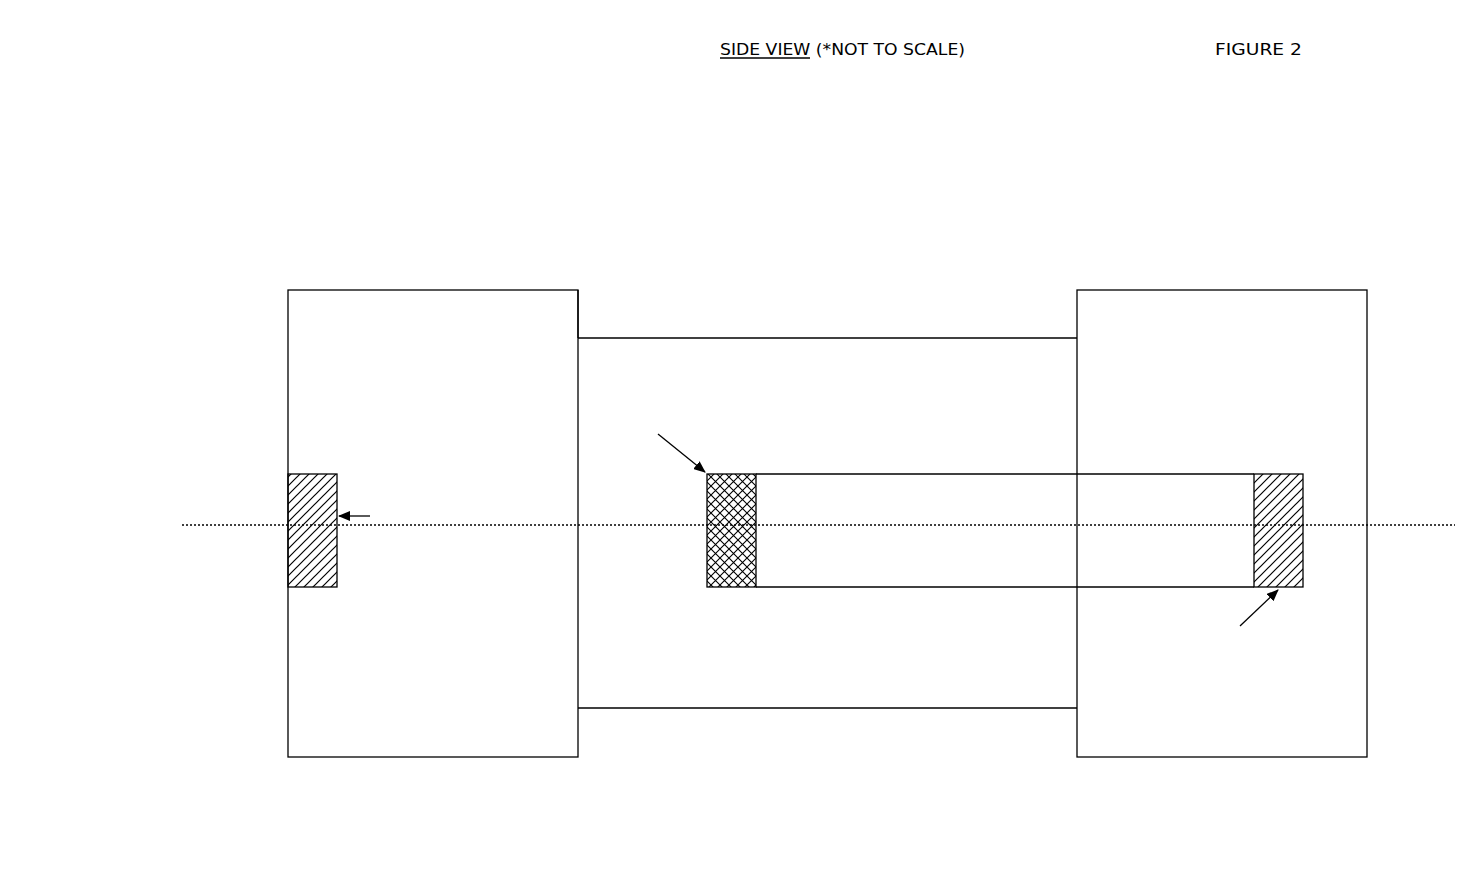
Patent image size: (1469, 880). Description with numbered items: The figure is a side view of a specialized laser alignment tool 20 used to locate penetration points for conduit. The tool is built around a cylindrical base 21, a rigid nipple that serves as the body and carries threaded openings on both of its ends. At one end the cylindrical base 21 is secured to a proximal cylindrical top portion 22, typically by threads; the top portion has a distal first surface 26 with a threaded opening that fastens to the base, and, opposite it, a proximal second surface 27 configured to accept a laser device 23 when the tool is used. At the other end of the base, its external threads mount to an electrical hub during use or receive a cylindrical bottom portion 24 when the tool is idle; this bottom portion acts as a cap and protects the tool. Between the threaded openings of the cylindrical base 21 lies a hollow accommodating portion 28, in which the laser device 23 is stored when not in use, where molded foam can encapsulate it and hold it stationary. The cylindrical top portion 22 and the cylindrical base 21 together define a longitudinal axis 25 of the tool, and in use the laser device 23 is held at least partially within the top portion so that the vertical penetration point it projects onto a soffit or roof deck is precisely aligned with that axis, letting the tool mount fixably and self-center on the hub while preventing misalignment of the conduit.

The specialized laser alignment tool 20 is at (917, 395).
The cylindrical base 21 is at (754, 305).
The cylindrical top portion 22 is at (296, 268).
The laser device 23 is at (963, 604).
The cylindrical bottom portion 24 is at (1158, 288).
The longitudinal axis 25 is at (1425, 490).
The distal first surface 26 is at (596, 304).
The proximal second surface 27 is at (271, 467).
The hollow accommodating portion 28 is at (757, 527).